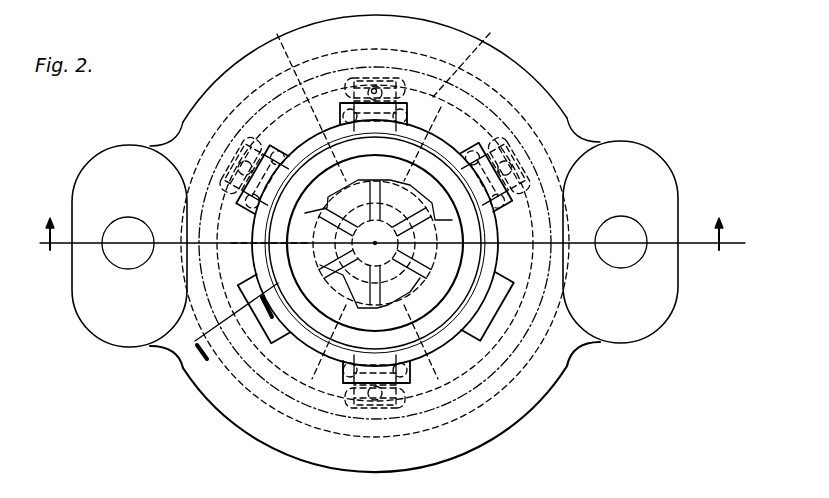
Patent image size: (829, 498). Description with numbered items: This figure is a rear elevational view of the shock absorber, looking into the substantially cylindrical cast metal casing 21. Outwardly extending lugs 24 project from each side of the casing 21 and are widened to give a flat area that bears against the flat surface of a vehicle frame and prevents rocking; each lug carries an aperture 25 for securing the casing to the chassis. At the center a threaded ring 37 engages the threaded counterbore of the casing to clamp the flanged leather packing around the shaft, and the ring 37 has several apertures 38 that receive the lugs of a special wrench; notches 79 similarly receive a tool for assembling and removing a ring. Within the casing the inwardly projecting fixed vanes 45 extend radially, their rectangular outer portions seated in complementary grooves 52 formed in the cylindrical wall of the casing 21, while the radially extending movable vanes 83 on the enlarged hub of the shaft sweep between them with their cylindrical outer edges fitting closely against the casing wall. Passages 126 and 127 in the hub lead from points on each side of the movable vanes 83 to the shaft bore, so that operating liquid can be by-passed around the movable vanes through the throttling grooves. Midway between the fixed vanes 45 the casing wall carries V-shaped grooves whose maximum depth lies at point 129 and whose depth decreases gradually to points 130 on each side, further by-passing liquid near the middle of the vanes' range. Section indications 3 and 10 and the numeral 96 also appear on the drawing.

The section line 3- 3 is at (381, 225).
The section line 10- 10 is at (223, 317).
The casing 21 is at (367, 457).
The lugs 24 is at (93, 320).
The apertures 25 is at (117, 265).
The threaded ring 37 is at (571, 337).
The apertures 38 is at (262, 340).
The fixed vanes 45 is at (225, 198).
The grooves 52 is at (232, 178).
The notches 79 is at (403, 98).
The movable vanes 83 is at (257, 442).
The annular channel 96 is at (495, 108).
The passages 126 is at (520, 352).
The passages 127 is at (483, 415).
The point of maximum depth 129 is at (363, 72).
The points 130 is at (381, 102).